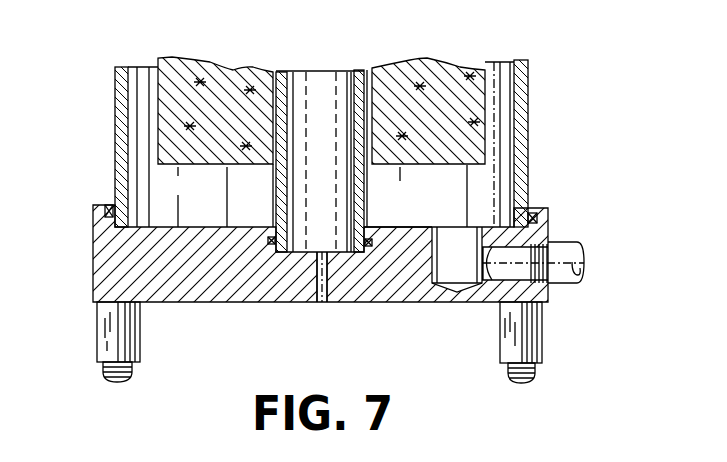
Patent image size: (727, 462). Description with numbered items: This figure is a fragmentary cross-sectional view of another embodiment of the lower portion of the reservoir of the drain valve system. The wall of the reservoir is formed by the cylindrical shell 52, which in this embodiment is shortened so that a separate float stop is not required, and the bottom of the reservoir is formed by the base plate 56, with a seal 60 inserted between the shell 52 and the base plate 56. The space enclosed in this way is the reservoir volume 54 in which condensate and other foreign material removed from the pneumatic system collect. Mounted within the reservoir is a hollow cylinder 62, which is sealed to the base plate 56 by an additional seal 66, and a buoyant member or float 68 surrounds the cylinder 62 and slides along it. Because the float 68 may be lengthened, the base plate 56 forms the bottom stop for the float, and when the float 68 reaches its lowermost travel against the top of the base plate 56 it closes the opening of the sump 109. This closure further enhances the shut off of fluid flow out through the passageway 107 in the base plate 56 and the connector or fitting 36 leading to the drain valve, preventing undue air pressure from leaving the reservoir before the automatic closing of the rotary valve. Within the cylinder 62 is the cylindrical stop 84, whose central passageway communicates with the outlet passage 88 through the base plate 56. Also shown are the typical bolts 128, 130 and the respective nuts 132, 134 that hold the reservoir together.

The inlet line fitting 36 is at (566, 244).
The cylindrical shell 52 is at (115, 127).
The reservoir volume 54 is at (142, 91).
The base plate 56 is at (233, 302).
The seal 60 is at (104, 204).
The hollow cylinder 62 is at (274, 186).
The seal 66 is at (375, 232).
The buoyant member 68 is at (222, 165).
The hollow cylinder stop 84 is at (348, 198).
The outlet passage 88 is at (327, 304).
The passageway 107 is at (507, 232).
The sump 109 is at (456, 210).
The bolt 128 is at (133, 373).
The bolt 130 is at (536, 378).
The nut 132 is at (97, 326).
The nut 134 is at (542, 325).